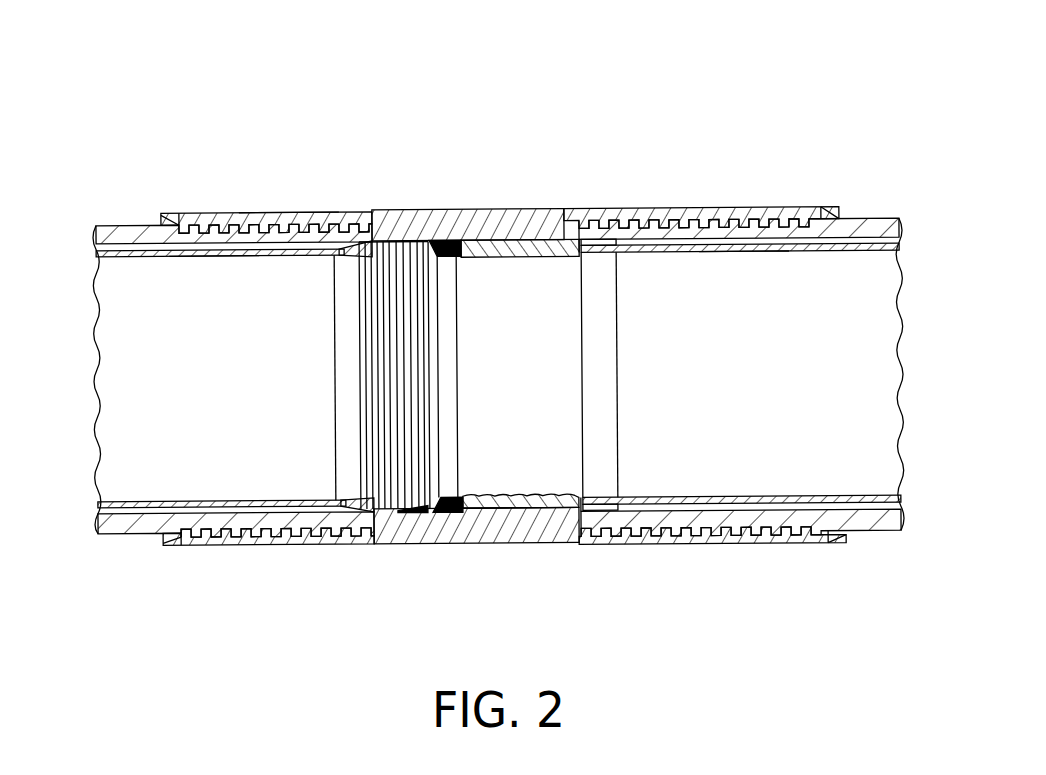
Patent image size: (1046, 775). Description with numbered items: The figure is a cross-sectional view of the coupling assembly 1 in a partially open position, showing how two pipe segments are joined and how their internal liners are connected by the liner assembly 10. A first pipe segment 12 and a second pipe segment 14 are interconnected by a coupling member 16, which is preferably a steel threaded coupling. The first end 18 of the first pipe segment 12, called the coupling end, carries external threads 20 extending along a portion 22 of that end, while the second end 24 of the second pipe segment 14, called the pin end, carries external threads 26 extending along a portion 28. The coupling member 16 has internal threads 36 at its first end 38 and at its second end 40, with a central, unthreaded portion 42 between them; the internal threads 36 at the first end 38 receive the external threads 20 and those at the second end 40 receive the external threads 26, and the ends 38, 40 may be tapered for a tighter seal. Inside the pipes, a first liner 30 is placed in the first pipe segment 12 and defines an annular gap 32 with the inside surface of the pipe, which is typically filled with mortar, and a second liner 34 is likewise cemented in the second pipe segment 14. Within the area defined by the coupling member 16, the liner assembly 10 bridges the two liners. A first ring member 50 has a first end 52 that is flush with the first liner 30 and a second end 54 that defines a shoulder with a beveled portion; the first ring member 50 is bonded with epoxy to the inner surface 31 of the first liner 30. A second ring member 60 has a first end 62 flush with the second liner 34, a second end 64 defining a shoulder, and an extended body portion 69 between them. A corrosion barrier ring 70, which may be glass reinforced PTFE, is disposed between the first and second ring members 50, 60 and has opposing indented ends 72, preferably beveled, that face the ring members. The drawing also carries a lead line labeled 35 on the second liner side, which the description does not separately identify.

The coupling assembly 1 is at (700, 112).
The liner assembly 10 is at (447, 238).
The first pipe segment 12 is at (132, 221).
The second pipe segment 14 is at (870, 221).
The coupling member 16 is at (482, 185).
The first end 18 is at (372, 209).
The external threads 20 is at (290, 211).
The portion 22 is at (243, 221).
The second end 24 is at (566, 209).
The external threads 26 is at (657, 221).
The portion 28 is at (762, 209).
The first liner 30 is at (150, 255).
The inner surface 31 is at (223, 257).
The annular gap 32 is at (182, 221).
The second liner 34 is at (797, 254).
The inner surface of second liner 35 is at (737, 256).
The internal threads 36 is at (310, 543).
The first end 38 is at (173, 543).
The second end 40 is at (797, 545).
The central, unthreaded portion 42 is at (548, 545).
The first ring member 50 is at (352, 262).
The first end 52 is at (342, 263).
The second end 54 is at (380, 262).
The second ring member 60 is at (478, 489).
The first end 62 is at (590, 492).
The second end 64 is at (473, 543).
The extended body portion 69 is at (525, 494).
The corrosion barrier ring 70 is at (445, 494).
The opposing indented ends 72 is at (378, 543).